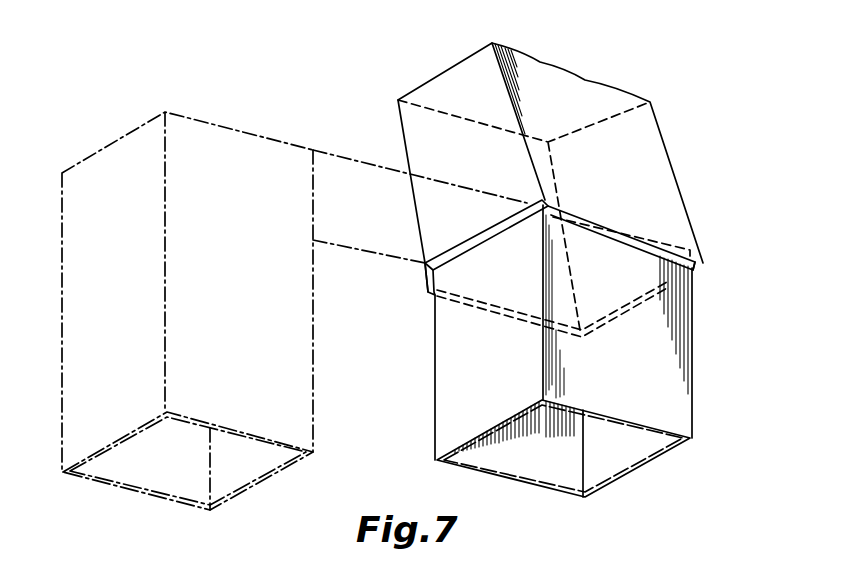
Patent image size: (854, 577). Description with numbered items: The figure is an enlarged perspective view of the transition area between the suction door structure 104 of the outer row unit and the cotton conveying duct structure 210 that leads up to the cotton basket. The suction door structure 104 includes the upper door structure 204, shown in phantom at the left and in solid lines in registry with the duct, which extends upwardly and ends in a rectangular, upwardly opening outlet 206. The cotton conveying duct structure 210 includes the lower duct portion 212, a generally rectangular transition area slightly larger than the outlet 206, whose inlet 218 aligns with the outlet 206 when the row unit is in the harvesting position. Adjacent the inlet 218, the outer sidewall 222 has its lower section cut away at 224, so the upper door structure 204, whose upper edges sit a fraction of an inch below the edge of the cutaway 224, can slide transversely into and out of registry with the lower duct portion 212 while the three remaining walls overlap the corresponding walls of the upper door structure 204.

The suction door structure 104 is at (422, 464).
The upper door structure 204 is at (435, 362).
The outlet 206 is at (477, 265).
The cotton conveying duct structure 210 is at (572, 214).
The lower duct portion 212 is at (672, 158).
The inlet 218 is at (643, 262).
The outer sidewall 222 is at (445, 90).
The cutaway 224 is at (425, 263).